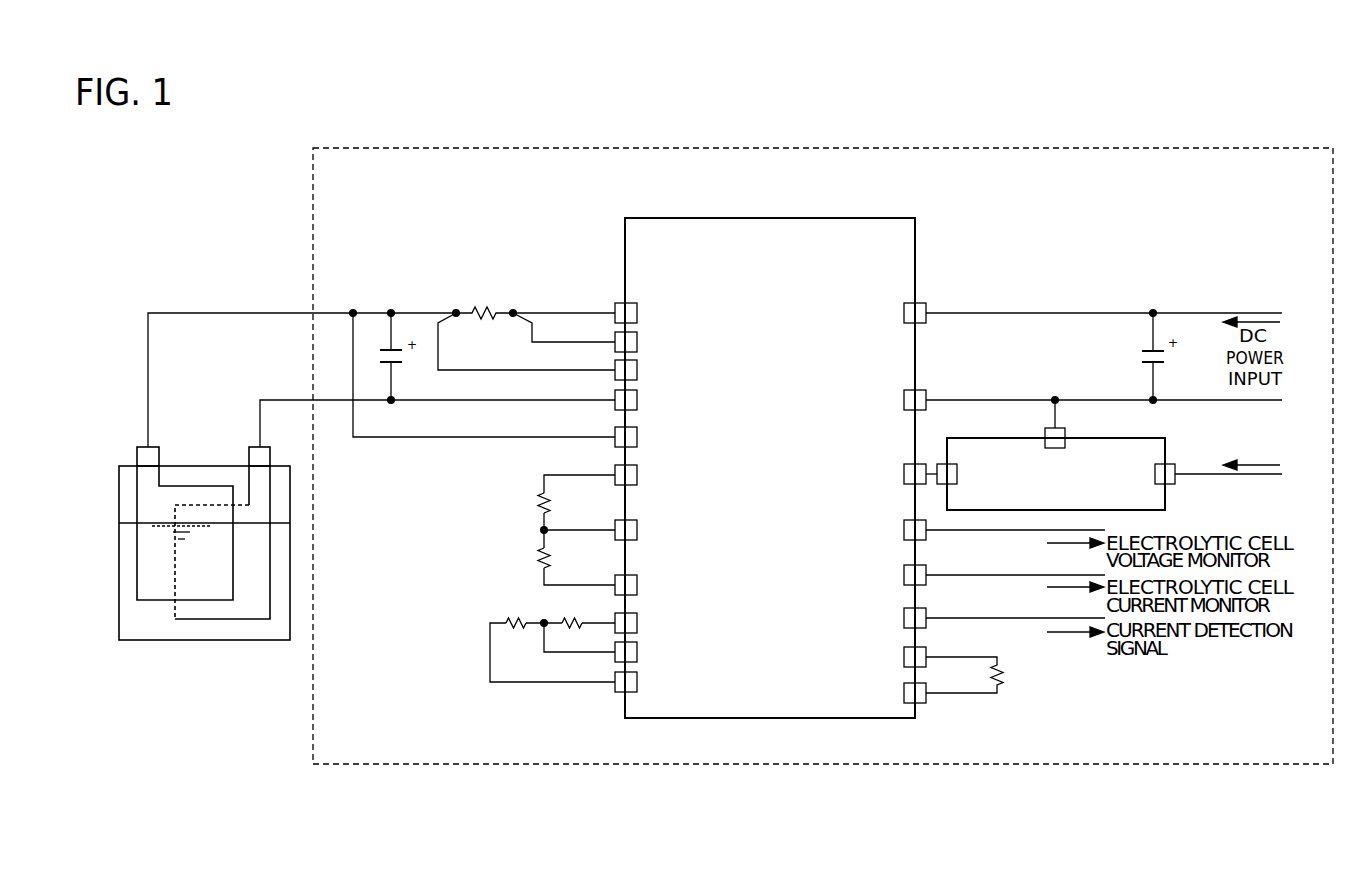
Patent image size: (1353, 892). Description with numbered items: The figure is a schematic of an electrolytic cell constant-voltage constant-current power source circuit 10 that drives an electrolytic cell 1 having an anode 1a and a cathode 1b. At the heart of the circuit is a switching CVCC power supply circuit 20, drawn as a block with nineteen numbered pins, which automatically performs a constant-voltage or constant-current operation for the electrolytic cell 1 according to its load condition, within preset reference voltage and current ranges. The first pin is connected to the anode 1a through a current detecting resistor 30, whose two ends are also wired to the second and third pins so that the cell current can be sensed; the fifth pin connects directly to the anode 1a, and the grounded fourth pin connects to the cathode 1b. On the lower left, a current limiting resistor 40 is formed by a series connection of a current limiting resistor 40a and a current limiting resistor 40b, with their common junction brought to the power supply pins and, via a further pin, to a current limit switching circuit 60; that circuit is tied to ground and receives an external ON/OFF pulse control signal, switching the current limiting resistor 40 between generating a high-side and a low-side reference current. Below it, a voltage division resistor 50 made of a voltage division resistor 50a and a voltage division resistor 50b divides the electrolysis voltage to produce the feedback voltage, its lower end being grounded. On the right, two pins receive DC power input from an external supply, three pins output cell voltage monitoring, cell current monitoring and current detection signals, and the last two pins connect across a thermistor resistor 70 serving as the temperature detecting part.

The electrolytic cell 1 is at (192, 541).
The anode 1a is at (137, 447).
The cathode 1b is at (249, 447).
The electrolytic cell constant-voltage constant-current power source circuit 10 is at (858, 148).
The switching CVCC power supply circuit 20 is at (915, 248).
The current detecting resistor 30 is at (488, 307).
The current limiting resistor 40 is at (504, 530).
The current limiting resistor 40a is at (544, 500).
The current limiting resistor 40b is at (544, 556).
The voltage division resistor 50 is at (494, 632).
The voltage division resistor 50a is at (572, 620).
The voltage division resistor 50b is at (508, 621).
The current limit switching circuit 60 is at (1101, 434).
The thermistor resistor 70 is at (1012, 676).